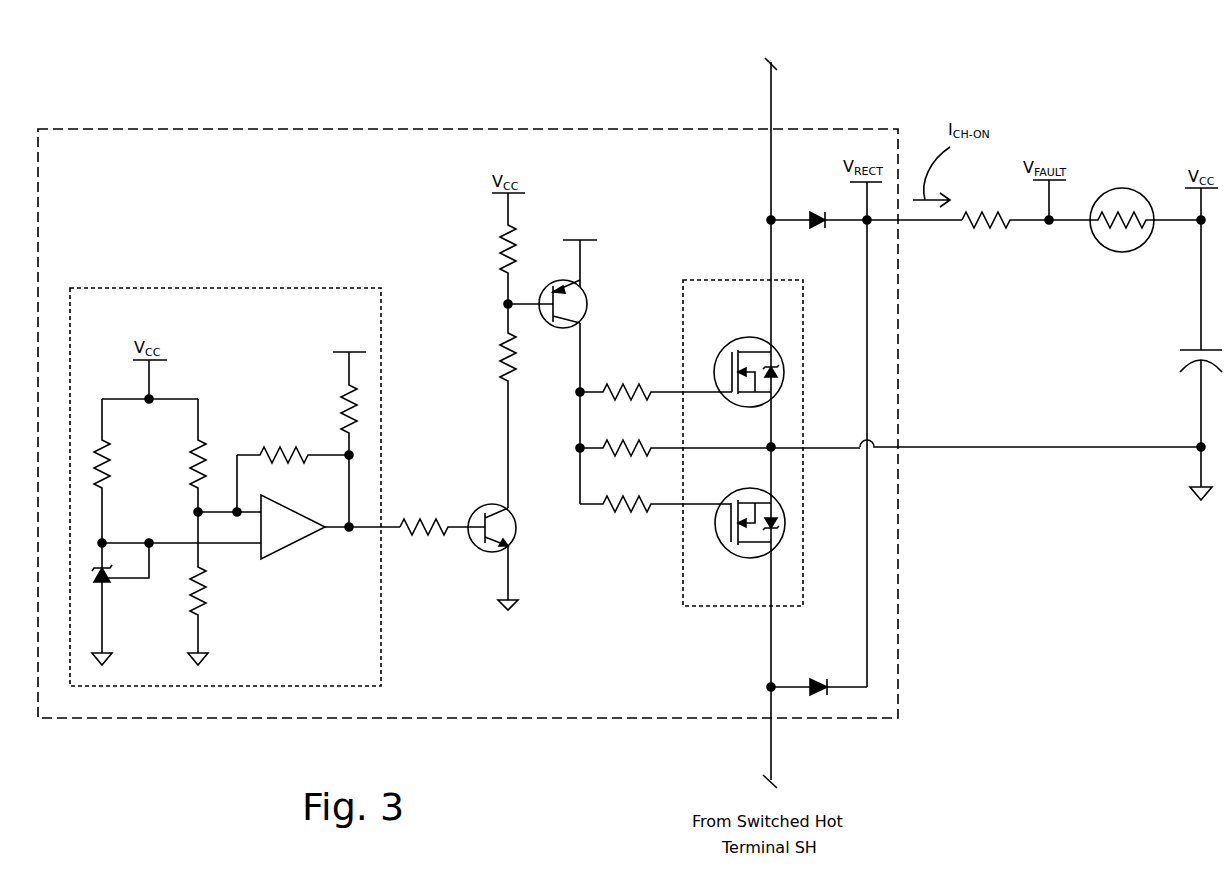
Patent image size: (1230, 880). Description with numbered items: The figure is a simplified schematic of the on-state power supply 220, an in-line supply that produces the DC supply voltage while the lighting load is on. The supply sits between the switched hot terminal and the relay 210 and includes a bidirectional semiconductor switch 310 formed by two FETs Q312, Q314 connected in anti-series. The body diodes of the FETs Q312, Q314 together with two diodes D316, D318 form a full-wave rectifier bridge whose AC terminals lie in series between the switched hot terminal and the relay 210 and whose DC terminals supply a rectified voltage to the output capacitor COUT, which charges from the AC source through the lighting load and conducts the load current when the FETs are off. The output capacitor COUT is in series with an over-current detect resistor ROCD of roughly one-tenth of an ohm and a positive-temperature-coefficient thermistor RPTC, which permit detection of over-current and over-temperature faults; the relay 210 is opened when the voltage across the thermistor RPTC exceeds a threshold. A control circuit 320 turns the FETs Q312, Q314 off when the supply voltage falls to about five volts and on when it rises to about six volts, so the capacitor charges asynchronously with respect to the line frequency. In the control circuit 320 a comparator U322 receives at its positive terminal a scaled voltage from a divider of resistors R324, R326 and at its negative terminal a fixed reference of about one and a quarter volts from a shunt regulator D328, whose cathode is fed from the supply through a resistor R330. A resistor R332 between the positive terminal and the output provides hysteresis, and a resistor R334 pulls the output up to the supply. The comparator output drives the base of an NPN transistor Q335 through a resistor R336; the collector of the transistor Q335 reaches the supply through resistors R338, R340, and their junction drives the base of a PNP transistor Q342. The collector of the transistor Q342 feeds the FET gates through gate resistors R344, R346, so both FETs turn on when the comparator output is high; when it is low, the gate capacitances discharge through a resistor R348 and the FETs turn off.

The on-state power supply 220 is at (858, 718).
The control circuit 320 is at (260, 288).
The bidirectional semiconductor switch 310 is at (728, 606).
The relay 210 is at (767, 406).
The resistor R324 is at (178, 462).
The resistor R330 is at (102, 482).
The resistor R326 is at (205, 595).
The shunt regulator D328 is at (103, 586).
The resistor R332 is at (288, 447).
The resistor R334 is at (330, 403).
The comparator U322 is at (290, 530).
The resistor R336 is at (430, 533).
The NPN bipolar junction transistor Q335 is at (492, 552).
The resistor R340 is at (497, 263).
The resistor R338 is at (497, 360).
The PNP bipolar junction transistor Q342 is at (592, 310).
The gate resistor R344 is at (615, 397).
The resistor R348 is at (615, 453).
The gate resistor R346 is at (623, 512).
The FET Q312 is at (742, 338).
The FET Q314 is at (722, 548).
The diode D316 is at (813, 225).
The diode D318 is at (820, 680).
The over-current detect resistor ROCD is at (1000, 228).
The PTC thermistor RPTC is at (1120, 252).
The output capacitor COUT is at (1183, 349).